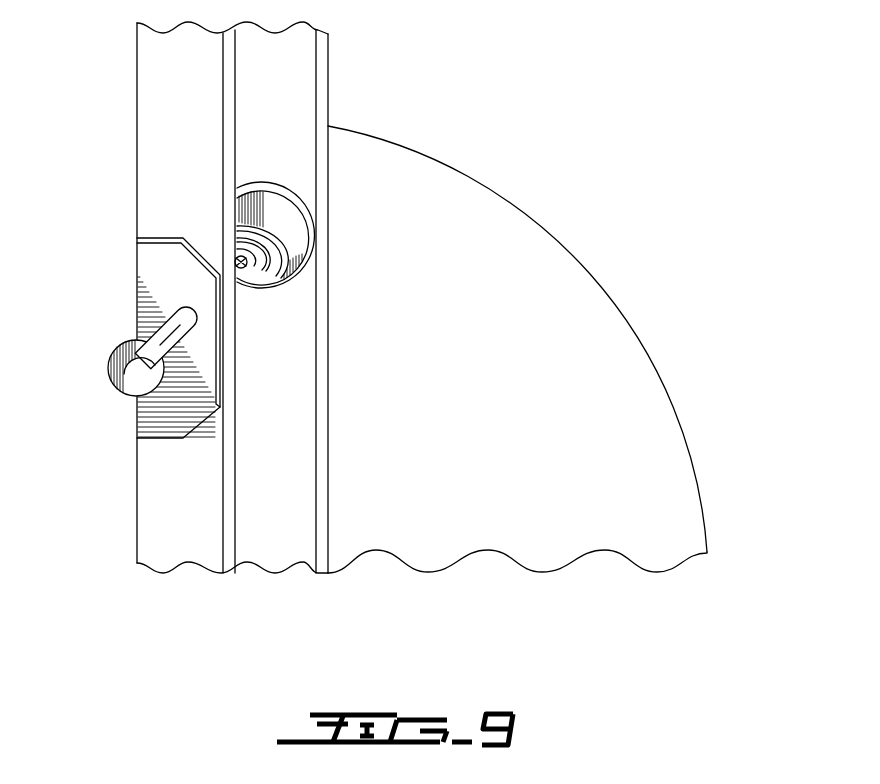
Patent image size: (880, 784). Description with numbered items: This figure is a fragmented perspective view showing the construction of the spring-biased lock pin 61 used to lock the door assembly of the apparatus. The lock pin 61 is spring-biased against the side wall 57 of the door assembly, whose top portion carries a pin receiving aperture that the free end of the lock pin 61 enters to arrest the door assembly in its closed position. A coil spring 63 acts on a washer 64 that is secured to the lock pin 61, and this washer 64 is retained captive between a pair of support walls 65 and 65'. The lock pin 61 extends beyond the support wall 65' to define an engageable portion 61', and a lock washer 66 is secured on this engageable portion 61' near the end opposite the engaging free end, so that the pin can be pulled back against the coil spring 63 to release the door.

The side wall 57 is at (610, 410).
The spring-biased lock pin 61 is at (324, 334).
The engageable portion 61' is at (111, 340).
The coil spring 63 is at (271, 252).
The washer 64 is at (272, 204).
The support wall 65 is at (280, 297).
The support wall 65' is at (122, 338).
The lock washer 66 is at (112, 378).